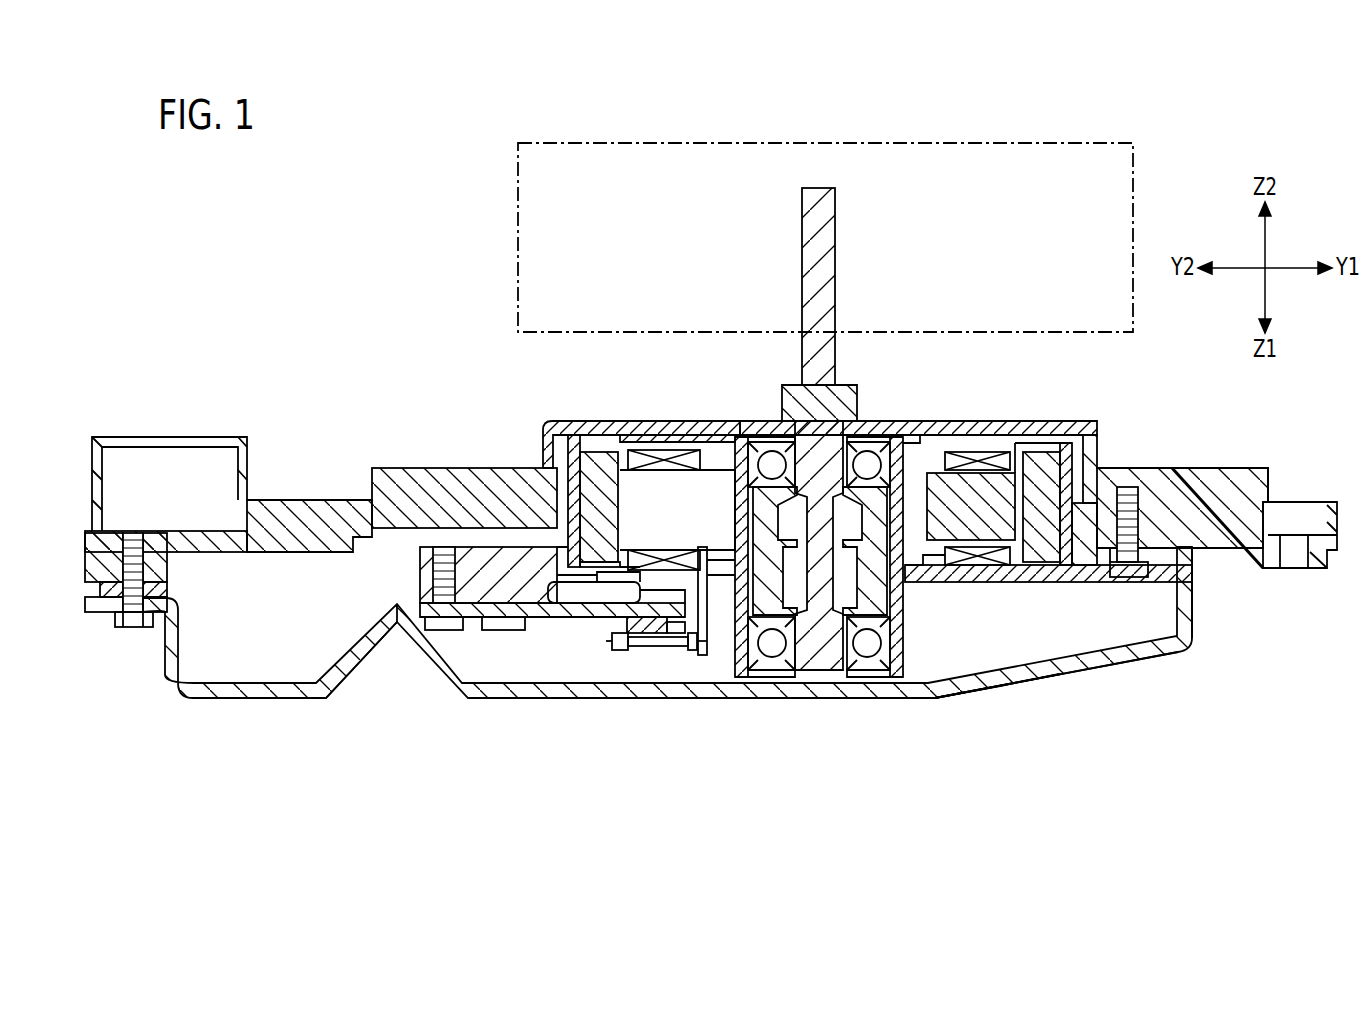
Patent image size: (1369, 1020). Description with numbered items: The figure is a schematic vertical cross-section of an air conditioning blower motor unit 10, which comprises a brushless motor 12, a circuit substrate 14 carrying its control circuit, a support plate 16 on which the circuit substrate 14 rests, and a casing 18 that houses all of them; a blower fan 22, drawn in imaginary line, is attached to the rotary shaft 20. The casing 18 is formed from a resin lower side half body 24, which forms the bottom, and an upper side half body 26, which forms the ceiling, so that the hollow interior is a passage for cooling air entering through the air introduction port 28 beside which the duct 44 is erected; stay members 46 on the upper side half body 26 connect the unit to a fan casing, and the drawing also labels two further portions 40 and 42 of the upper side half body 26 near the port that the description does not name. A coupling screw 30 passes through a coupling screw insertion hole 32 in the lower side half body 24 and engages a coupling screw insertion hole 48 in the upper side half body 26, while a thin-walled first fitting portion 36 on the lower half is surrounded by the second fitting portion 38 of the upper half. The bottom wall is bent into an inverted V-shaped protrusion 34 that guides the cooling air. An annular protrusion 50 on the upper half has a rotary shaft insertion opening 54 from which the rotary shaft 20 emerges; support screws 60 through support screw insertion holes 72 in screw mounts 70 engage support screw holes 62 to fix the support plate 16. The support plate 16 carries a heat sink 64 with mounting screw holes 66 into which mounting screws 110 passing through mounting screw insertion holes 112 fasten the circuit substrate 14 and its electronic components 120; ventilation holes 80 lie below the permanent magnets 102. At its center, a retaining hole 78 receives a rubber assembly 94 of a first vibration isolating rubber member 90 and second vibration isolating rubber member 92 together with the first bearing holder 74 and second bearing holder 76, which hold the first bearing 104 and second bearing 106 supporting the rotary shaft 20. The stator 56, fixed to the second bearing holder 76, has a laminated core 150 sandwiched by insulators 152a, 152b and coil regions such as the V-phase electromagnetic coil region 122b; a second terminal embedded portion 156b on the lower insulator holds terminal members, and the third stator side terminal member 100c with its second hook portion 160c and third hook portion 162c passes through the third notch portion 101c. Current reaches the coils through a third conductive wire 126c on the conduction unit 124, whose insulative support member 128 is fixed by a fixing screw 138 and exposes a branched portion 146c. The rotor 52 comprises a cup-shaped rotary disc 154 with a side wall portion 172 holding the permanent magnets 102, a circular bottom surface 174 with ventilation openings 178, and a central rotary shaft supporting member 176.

The air conditioning blower motor unit 10 is at (266, 181).
The brushless motor 12 is at (1146, 370).
The circuit substrate 14 is at (540, 645).
The support plate 16 is at (1082, 588).
The casing 18 is at (1278, 615).
The rotary shaft 20 is at (818, 213).
The blower fan 22 is at (518, 180).
The lower side half body 24 is at (1195, 648).
The upper side half body 26 is at (1238, 552).
The air introduction port 28 is at (215, 535).
The coupling screw 30 is at (130, 628).
The coupling screw insertion hole 32 is at (145, 615).
The protrusion 34 is at (345, 692).
The first fitting portion 36 is at (102, 612).
The second fitting portion 38 is at (92, 588).
The arm 40 is at (292, 518).
The base block 42 is at (410, 488).
The duct 44 is at (98, 462).
The stay member 46 is at (1330, 545).
The coupling screw insertion hole 48 is at (134, 545).
The annular protrusion 50 is at (548, 452).
The rotor 52 is at (1055, 505).
The rotary shaft insertion opening 54 is at (605, 435).
The stator 56 is at (1075, 462).
The support screw 60 is at (1175, 497).
The support screw hole 62 is at (1130, 497).
The heat sink 64 is at (540, 618).
The mounting screw hole 66 is at (433, 574).
The screw mount 70 is at (1105, 578).
The support screw insertion hole 72 is at (1130, 578).
The first bearing holder 74 is at (742, 675).
The second bearing holder 76 is at (895, 440).
The retaining hole 78 is at (845, 545).
The ventilation hole 80 is at (580, 605).
The first vibration isolating rubber member 90 is at (930, 668).
The second vibration isolating rubber member 92 is at (962, 664).
The rubber assembly 94 is at (925, 740).
The third stator side terminal member 100c is at (772, 660).
The third notch portion 101c is at (690, 580).
The permanent magnet 102 is at (600, 465).
The first bearing 104 is at (893, 672).
The second bearing 106 is at (862, 440).
The mounting screw 110 is at (400, 625).
The mounting screw insertion hole 112 is at (422, 606).
The electronic component 120 is at (503, 630).
The V-phase electromagnetic coil region 122b is at (1000, 485).
The conduction unit 124 is at (614, 652).
The third conductive wire 126c is at (655, 636).
The insulative support member 128 is at (667, 648).
The fixing screw 138 is at (620, 565).
The branched portion 146c is at (552, 598).
The laminated core 150 is at (1000, 578).
The insulator 152a is at (932, 578).
The insulator 152b is at (698, 430).
The rotary disc 154 is at (928, 420).
The second terminal embedded portion 156b is at (730, 470).
The second hook portion 160c is at (700, 560).
The third hook portion 162c is at (702, 658).
The side wall portion 172 is at (1100, 500).
The circular bottom surface 174 is at (945, 428).
The rotary shaft supporting member 176 is at (787, 395).
The ventilation opening 178 is at (655, 430).